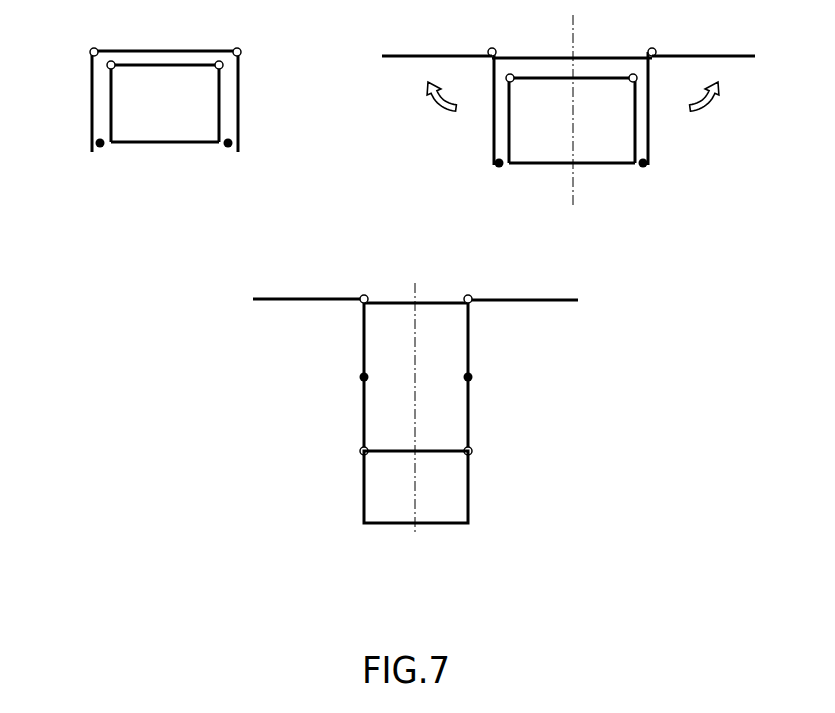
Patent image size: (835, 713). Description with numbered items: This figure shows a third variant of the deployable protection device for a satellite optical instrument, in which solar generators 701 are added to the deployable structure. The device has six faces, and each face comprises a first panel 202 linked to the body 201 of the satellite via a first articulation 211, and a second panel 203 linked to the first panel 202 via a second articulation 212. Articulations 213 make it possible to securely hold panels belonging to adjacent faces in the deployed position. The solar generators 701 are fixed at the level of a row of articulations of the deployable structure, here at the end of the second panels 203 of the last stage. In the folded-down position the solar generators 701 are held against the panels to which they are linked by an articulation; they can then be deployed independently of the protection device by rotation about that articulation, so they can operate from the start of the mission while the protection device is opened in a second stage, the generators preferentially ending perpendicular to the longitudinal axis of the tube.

The solar generator 701 is at (85, 122).
The body 201 is at (442, 523).
The first panel 202 is at (472, 412).
The second panel 203 is at (471, 345).
The first articulation 211 is at (474, 451).
The second articulation 212 is at (472, 377).
The articulation 213 is at (469, 295).